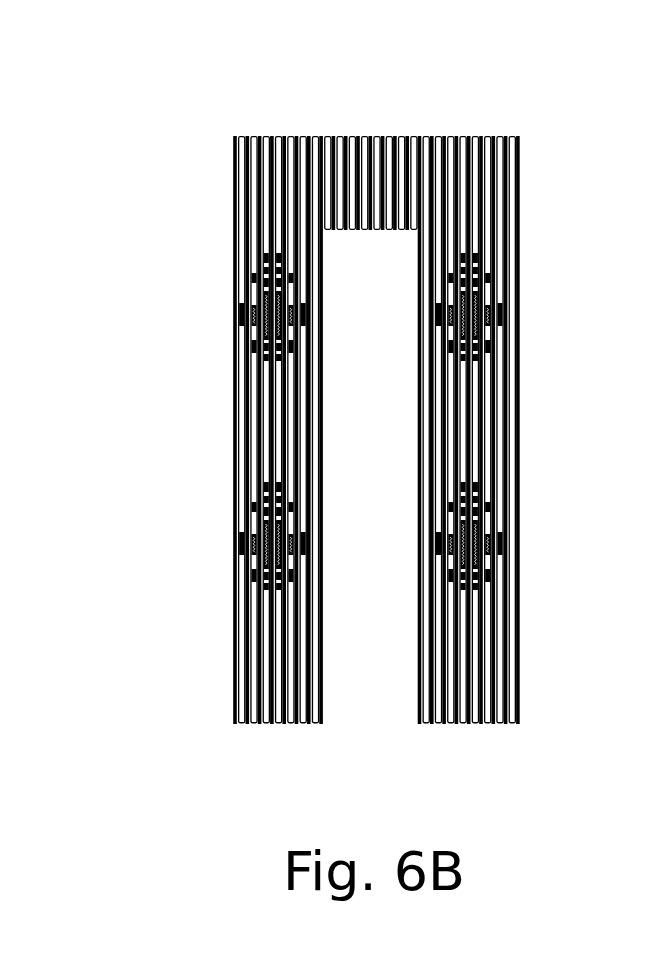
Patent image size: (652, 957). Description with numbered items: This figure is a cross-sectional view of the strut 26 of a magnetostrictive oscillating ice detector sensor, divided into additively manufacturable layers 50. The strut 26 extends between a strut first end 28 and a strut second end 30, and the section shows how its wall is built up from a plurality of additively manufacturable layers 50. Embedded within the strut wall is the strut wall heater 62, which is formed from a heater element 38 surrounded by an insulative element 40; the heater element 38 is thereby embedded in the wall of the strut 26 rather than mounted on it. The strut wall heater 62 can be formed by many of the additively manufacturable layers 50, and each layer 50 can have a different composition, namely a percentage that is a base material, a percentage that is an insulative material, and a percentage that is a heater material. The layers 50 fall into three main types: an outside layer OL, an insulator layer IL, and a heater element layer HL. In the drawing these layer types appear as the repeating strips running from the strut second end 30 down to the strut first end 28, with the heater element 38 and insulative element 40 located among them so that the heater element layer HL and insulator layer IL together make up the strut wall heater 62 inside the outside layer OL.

The strut wall heater 62 is at (384, 394).
The strut 26 is at (223, 245).
The outside layer OL is at (224, 140).
The strut second end 30 is at (223, 177).
The insulator layer IL is at (235, 130).
The heater element layer HL is at (247, 130).
The additively manufacturable layers 50 is at (308, 130).
The insulative element 40 is at (246, 290).
The heater element 38 is at (258, 318).
The strut first end 28 is at (223, 712).